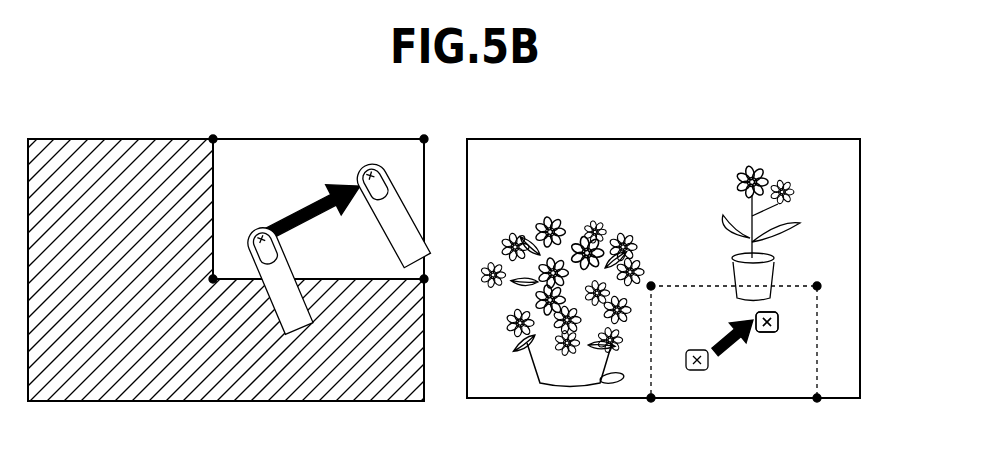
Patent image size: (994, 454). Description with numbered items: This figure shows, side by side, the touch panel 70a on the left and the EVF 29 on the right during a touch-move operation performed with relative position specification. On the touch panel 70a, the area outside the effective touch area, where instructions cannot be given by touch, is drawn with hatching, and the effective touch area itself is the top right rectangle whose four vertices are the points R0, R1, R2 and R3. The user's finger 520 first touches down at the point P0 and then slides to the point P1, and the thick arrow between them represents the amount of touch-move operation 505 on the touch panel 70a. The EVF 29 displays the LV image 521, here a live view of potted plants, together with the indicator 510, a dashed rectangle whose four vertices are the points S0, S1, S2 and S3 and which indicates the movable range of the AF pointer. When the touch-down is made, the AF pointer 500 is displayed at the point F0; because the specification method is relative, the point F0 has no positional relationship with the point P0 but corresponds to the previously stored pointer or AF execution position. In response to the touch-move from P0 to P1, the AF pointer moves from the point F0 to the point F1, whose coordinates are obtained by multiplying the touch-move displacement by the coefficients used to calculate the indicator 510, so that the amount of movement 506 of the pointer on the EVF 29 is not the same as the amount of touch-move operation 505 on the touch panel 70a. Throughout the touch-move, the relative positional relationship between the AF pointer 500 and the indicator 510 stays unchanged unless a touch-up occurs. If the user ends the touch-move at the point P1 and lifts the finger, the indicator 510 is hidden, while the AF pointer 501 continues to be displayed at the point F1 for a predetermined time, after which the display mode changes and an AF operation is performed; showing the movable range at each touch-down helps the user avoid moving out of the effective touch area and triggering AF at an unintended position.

The touch panel 70a is at (117, 139).
The vertex of effective touch area R0 is at (213, 279).
The vertex of effective touch area R1 is at (213, 139).
The vertex of effective touch area R2 is at (424, 139).
The vertex of effective touch area R3 is at (424, 279).
The amount of touch-move operation 505 is at (306, 212).
The touch-down position P0 is at (260, 227).
The touch-move end position P1 is at (367, 160).
The finger 520 is at (287, 273).
The EVF 29 is at (560, 139).
The LV image 521 is at (855, 210).
The indicator 510 is at (800, 284).
The AF pointer 500 is at (697, 372).
The vertex of indicator area S0 is at (651, 398).
The vertex of indicator area S1 is at (651, 286).
The vertex of indicator area S2 is at (817, 286).
The vertex of indicator area S3 is at (817, 398).
The AF pointer position on touch-down F0 is at (697, 350).
The AF pointer position after touch-move F1 is at (772, 333).
The AF pointer 501 is at (778, 322).
The amount of movement of AF pointer 506 is at (735, 352).